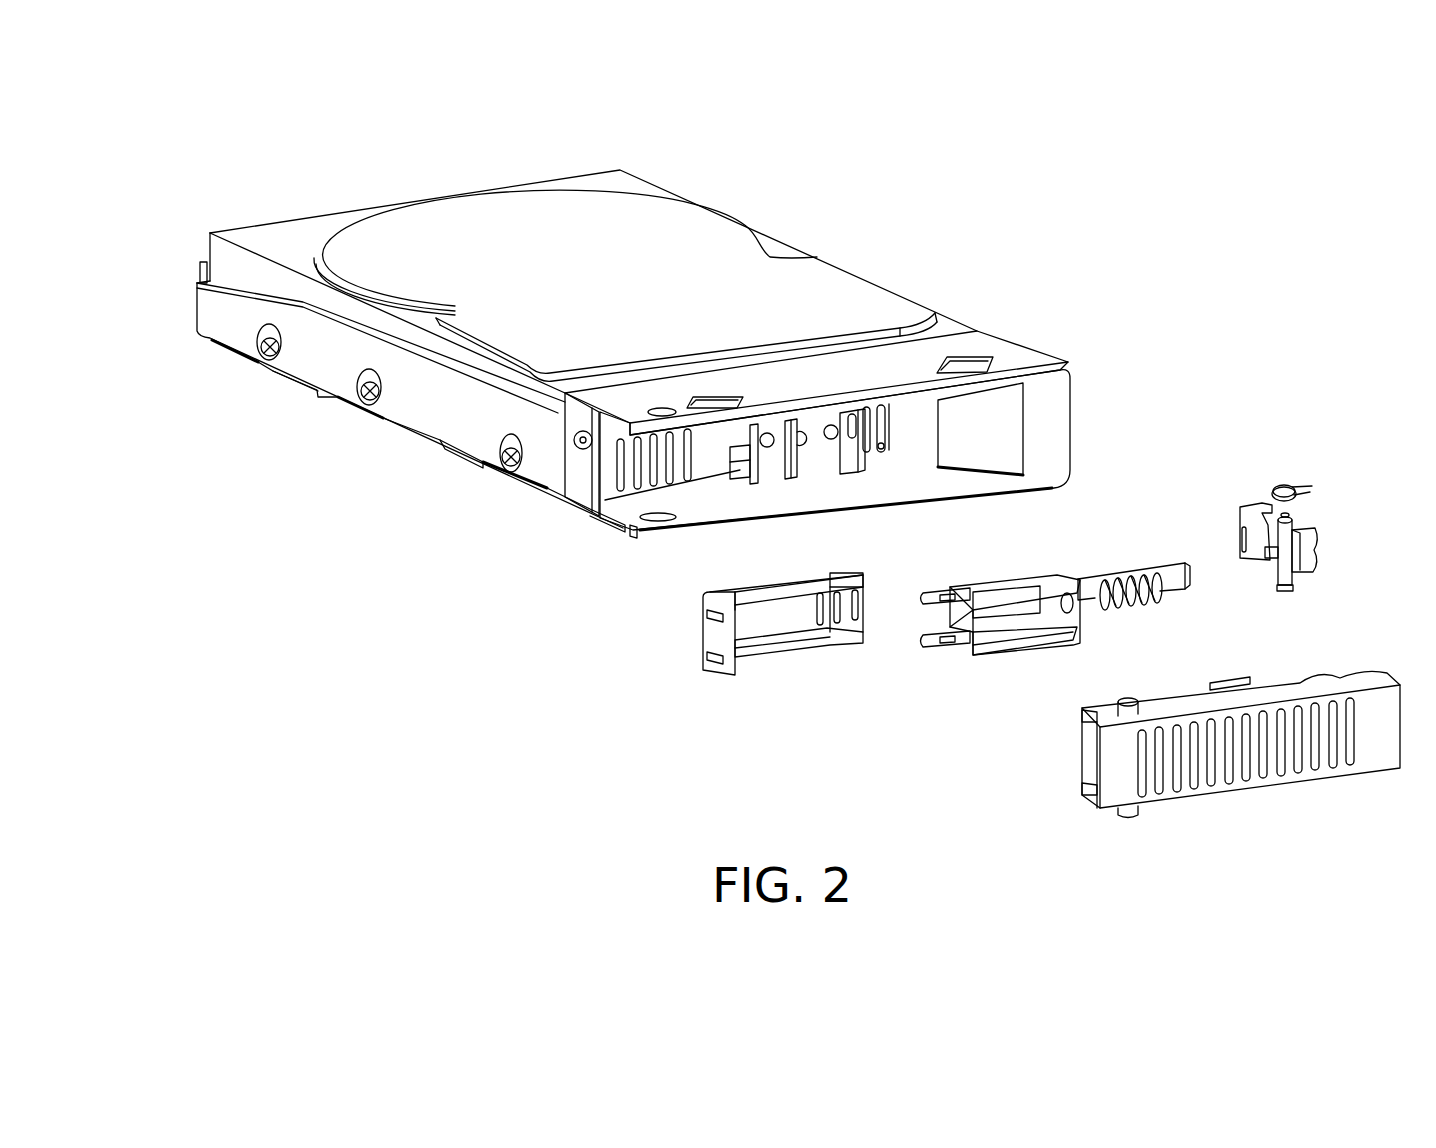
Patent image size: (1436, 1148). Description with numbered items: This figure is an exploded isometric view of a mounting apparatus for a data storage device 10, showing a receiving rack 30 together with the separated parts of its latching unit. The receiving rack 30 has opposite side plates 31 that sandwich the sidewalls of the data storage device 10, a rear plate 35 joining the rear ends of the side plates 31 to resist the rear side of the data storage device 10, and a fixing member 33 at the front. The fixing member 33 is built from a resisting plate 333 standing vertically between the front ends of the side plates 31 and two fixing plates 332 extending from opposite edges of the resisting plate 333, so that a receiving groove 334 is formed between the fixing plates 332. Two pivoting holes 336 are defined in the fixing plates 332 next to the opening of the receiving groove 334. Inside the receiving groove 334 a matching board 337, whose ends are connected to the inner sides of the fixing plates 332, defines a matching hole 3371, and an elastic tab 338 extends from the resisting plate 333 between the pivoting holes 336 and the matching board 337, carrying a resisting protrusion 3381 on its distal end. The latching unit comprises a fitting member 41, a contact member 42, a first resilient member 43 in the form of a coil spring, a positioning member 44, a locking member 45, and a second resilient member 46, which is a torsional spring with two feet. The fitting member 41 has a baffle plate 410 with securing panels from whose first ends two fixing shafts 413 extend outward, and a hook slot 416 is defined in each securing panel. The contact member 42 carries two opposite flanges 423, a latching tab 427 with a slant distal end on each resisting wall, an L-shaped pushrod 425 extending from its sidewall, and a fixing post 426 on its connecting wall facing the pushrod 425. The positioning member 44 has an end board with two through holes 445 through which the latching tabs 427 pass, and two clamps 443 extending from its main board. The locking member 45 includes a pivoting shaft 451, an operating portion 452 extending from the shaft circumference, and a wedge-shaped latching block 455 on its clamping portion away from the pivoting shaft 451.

The data storage device 10 is at (568, 275).
The receiving rack 30 is at (648, 374).
The side plates 31 is at (417, 407).
The fixing member 33 is at (807, 420).
The fixing plates 332 is at (987, 347).
The resisting plate 333 is at (808, 420).
The receiving groove 334 is at (817, 470).
The pivoting holes 336 is at (598, 413).
The matching board 337 is at (877, 482).
The matching hole 3371 is at (878, 445).
The elastic tab 338 is at (702, 507).
The resisting protrusion 3381 is at (748, 478).
The rear plate 35 is at (207, 272).
The fitting member 41 is at (1213, 748).
The baffle plate 410 is at (1370, 748).
The fixing shafts 413 is at (1127, 820).
The hook slot 416 is at (1228, 680).
The contact member 42 is at (1052, 613).
The flanges 423 is at (1005, 647).
The pushrod 425 is at (1173, 577).
The fixing post 426 is at (1085, 605).
The latching tab 427 is at (933, 645).
The first resilient member 43 is at (1115, 577).
The positioning member 44 is at (753, 643).
The clamps 443 is at (848, 638).
The through holes 445 is at (712, 660).
The locking member 45 is at (1289, 538).
The pivoting shaft 451 is at (1283, 562).
The operating portion 452 is at (1312, 548).
The latching block 455 is at (1242, 533).
The second resilient member 46 is at (1290, 487).